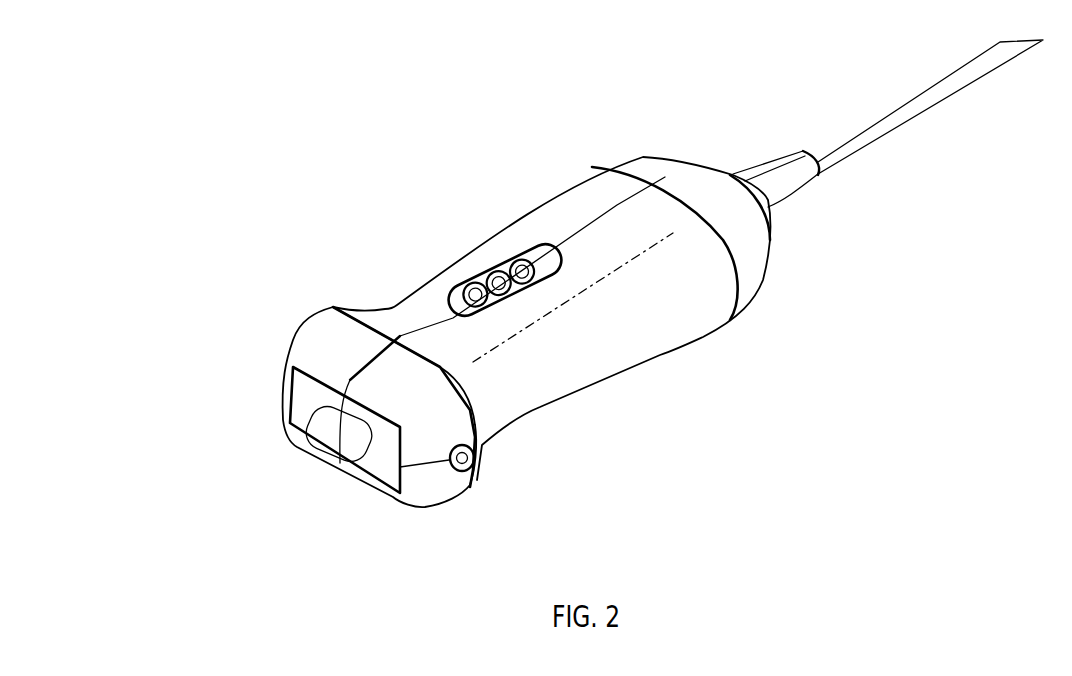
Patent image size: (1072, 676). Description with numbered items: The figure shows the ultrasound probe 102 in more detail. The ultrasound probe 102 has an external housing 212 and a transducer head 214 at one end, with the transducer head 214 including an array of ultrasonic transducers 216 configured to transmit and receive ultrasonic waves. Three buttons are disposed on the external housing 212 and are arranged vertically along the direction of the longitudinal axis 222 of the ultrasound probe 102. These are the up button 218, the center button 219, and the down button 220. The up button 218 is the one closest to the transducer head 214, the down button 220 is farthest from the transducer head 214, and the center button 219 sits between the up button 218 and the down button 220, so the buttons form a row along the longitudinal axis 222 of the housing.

The ultrasound probe 102 is at (578, 141).
The external housing 212 is at (548, 205).
The transducer head 214 is at (295, 365).
The array of ultrasonic transducers 216 is at (335, 432).
The up button 218 is at (450, 293).
The center button 219 is at (503, 272).
The down button 220 is at (515, 247).
The longitudinal axis 222 is at (633, 260).